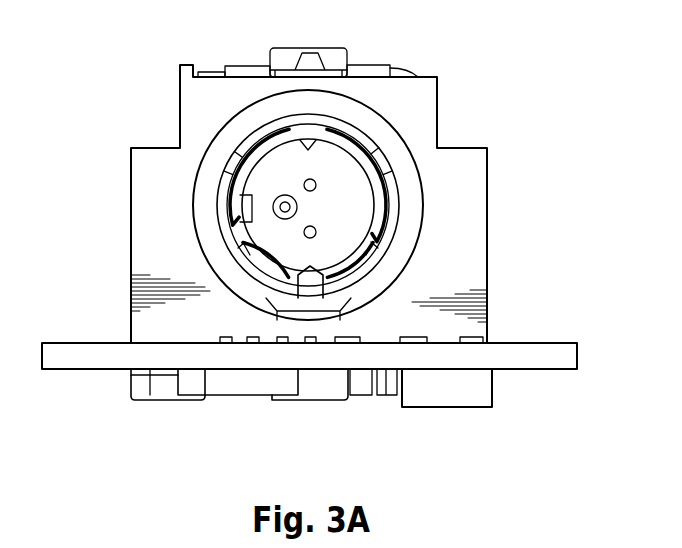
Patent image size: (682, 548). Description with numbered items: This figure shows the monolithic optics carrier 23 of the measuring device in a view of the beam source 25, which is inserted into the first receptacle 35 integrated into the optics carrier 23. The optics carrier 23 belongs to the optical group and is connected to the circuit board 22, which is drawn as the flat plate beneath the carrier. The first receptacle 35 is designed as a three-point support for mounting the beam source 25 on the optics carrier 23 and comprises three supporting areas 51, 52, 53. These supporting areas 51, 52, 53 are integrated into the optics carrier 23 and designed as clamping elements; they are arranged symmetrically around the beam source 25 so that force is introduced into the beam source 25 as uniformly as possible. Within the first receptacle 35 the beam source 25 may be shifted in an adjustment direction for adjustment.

The circuit board 22 is at (82, 357).
The optics carrier 23 is at (157, 187).
The beam source 25 is at (347, 194).
The first receptacle 35 is at (343, 152).
The supporting area 51 is at (242, 247).
The supporting area 52 is at (373, 243).
The supporting area 53 is at (302, 138).